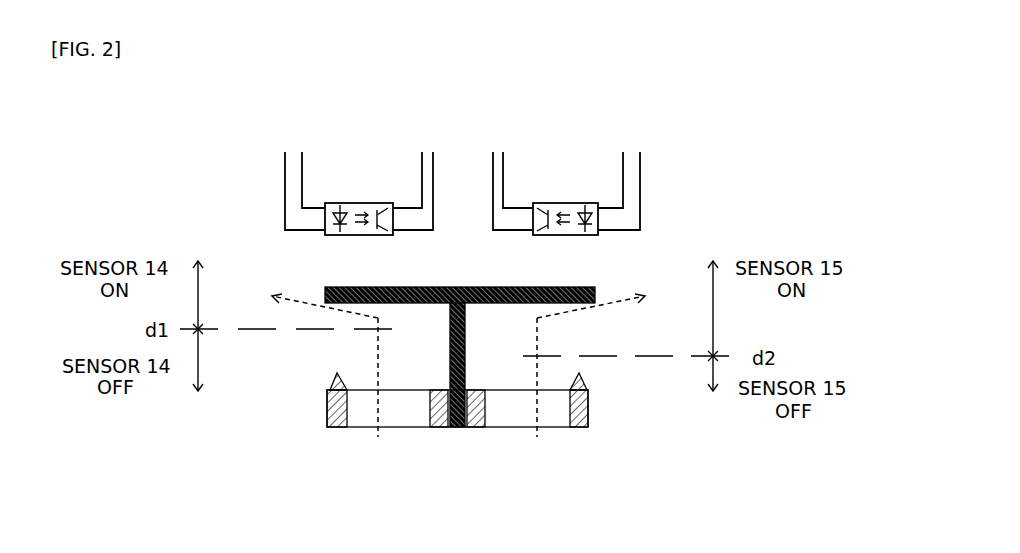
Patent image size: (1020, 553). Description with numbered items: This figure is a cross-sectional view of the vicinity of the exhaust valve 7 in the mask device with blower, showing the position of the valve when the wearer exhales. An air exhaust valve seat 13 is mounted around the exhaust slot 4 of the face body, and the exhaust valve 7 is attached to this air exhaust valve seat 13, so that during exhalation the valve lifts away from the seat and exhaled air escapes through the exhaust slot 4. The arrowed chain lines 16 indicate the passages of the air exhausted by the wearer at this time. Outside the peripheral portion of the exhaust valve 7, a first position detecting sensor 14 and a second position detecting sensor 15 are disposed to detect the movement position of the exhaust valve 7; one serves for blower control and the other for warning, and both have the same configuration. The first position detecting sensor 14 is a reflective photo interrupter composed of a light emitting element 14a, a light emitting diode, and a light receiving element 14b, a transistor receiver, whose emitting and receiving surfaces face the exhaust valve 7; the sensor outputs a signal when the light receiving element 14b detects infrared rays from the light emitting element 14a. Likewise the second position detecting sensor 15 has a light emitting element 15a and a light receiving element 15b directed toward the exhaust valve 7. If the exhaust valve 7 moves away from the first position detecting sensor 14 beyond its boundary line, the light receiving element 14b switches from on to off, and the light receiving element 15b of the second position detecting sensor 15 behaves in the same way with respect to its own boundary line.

The exhaust slot 4 is at (505, 413).
The exhaust valve 7 is at (572, 285).
The air exhaust valve seat 13 is at (590, 405).
The first position detecting sensor 14 is at (362, 178).
The light emitting element 14a is at (338, 200).
The light receiving element 14b is at (378, 200).
The second position detecting sensor 15 is at (572, 176).
The light emitting element 15a is at (585, 200).
The light receiving element 15b is at (545, 200).
The passages of exhausted air 16 is at (373, 413).